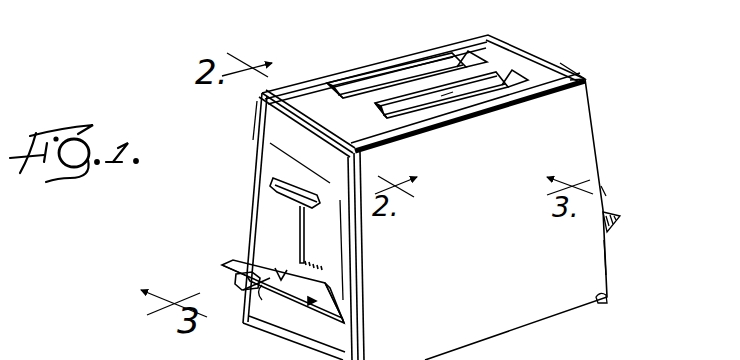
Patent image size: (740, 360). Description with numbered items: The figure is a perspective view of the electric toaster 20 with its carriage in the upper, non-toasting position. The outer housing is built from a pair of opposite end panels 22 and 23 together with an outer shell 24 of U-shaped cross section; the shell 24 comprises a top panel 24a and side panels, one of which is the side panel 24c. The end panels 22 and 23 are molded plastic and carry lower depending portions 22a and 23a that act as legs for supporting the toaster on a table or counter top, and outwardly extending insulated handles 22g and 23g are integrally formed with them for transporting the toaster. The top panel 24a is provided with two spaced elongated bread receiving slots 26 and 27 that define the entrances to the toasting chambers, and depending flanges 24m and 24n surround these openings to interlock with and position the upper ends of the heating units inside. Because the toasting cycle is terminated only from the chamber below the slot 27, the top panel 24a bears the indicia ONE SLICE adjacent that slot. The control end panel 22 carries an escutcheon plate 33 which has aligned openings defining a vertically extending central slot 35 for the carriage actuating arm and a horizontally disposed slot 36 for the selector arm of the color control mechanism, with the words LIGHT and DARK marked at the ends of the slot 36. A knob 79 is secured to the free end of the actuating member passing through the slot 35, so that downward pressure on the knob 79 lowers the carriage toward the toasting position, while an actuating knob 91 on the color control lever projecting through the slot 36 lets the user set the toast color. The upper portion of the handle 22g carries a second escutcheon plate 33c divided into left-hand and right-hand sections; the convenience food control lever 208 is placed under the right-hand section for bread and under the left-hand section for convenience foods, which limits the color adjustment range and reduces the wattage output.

The toaster 20 is at (608, 108).
The end panel 22 is at (250, 183).
The lower depending portion 22a is at (277, 120).
The handle 22g is at (222, 263).
The end panel 23 is at (603, 165).
The lower depending portion 23a is at (610, 300).
The handle 23g is at (620, 216).
The outer shell 24 is at (604, 191).
The top panel 24a is at (560, 68).
The side panel 24c is at (590, 257).
The depending flange 24m is at (447, 93).
The depending flange 24n is at (472, 52).
The bread receiving slot 26 is at (340, 92).
The bread receiving slot 27 is at (379, 115).
The escutcheon plate 33 is at (331, 237).
The escutcheon plate 33c is at (340, 311).
The vertical slot 35 is at (299, 204).
The horizontal slot 36 is at (262, 256).
The knob 79 is at (273, 178).
The actuating knob 91 is at (263, 293).
The control lever 208 is at (235, 280).